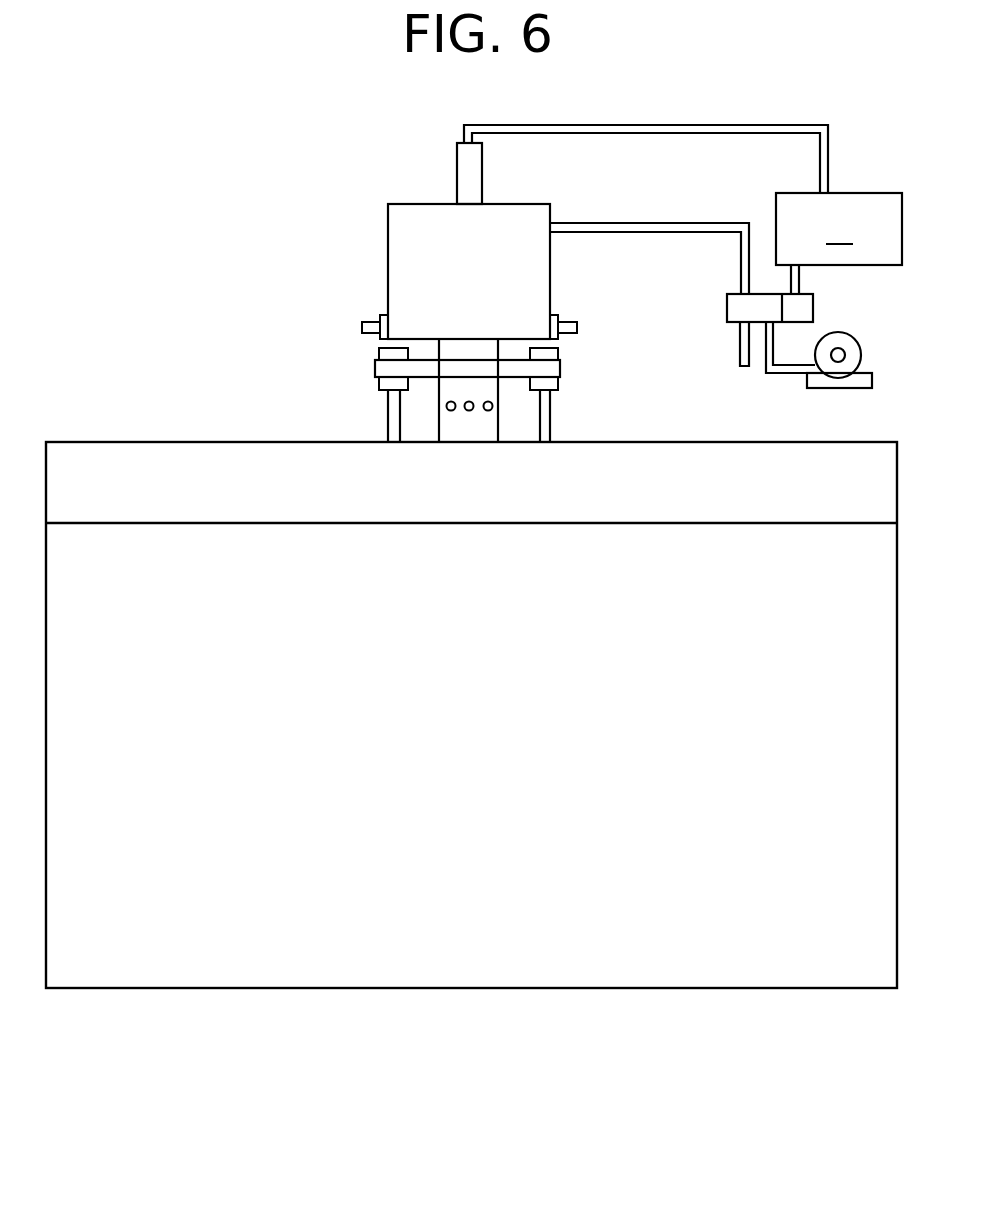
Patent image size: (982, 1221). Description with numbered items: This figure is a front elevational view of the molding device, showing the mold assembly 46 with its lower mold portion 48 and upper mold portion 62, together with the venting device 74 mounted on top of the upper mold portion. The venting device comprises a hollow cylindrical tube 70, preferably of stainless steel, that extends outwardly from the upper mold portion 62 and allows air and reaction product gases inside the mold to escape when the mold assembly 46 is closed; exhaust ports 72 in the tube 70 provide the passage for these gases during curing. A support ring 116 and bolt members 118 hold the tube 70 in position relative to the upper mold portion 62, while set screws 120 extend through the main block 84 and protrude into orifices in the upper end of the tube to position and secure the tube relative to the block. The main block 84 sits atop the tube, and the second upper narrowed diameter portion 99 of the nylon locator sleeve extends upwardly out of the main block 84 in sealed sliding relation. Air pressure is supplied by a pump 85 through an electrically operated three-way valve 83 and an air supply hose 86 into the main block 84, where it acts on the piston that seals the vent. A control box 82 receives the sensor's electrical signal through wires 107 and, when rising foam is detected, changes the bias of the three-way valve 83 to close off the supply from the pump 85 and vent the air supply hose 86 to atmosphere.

The mold assembly 46 is at (471, 701).
The lower mold portion 48 is at (202, 970).
The upper mold portion 62 is at (120, 450).
The hollow cylindrical tube 70 is at (490, 428).
The exhaust ports 72 is at (470, 414).
The venting device 74 is at (454, 241).
The control box 82 is at (839, 243).
The three-way valve 83 is at (732, 308).
The main block 84 is at (542, 281).
The pump 85 is at (842, 340).
The air supply hose 86 is at (667, 232).
The second upper narrowed diameter portion 99 is at (482, 177).
The wires 107 is at (655, 135).
The support ring 116 is at (377, 367).
The bolt members 118 is at (553, 410).
The set screws 120 is at (370, 323).